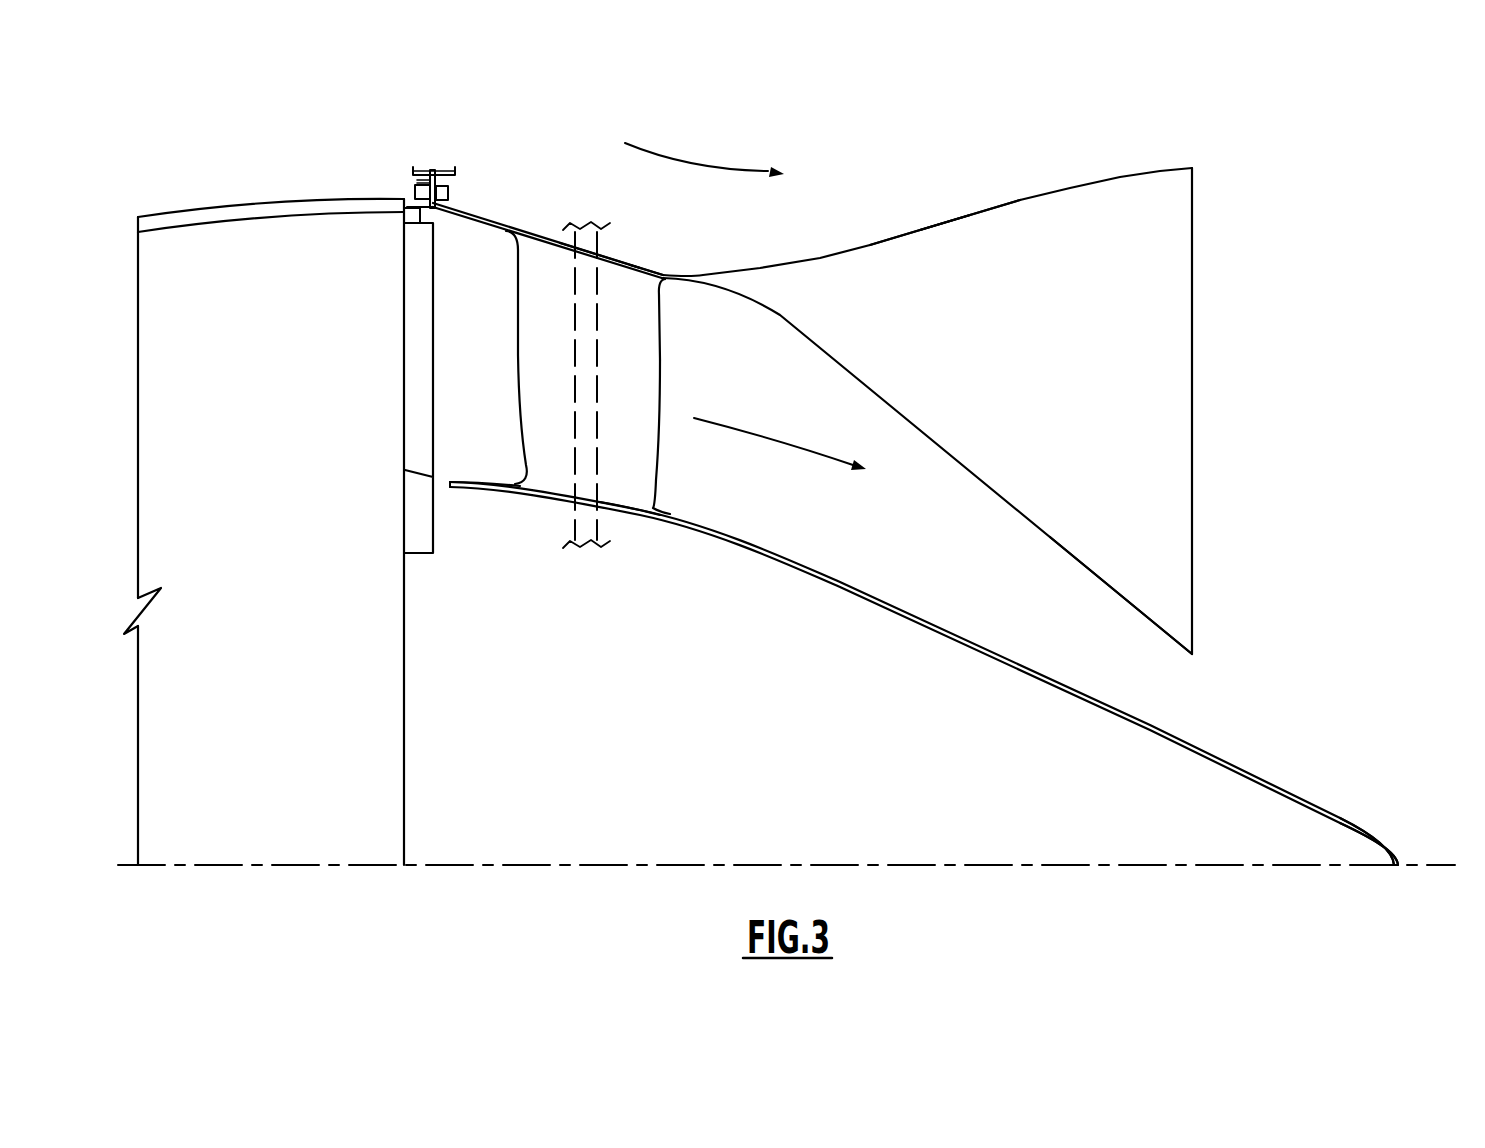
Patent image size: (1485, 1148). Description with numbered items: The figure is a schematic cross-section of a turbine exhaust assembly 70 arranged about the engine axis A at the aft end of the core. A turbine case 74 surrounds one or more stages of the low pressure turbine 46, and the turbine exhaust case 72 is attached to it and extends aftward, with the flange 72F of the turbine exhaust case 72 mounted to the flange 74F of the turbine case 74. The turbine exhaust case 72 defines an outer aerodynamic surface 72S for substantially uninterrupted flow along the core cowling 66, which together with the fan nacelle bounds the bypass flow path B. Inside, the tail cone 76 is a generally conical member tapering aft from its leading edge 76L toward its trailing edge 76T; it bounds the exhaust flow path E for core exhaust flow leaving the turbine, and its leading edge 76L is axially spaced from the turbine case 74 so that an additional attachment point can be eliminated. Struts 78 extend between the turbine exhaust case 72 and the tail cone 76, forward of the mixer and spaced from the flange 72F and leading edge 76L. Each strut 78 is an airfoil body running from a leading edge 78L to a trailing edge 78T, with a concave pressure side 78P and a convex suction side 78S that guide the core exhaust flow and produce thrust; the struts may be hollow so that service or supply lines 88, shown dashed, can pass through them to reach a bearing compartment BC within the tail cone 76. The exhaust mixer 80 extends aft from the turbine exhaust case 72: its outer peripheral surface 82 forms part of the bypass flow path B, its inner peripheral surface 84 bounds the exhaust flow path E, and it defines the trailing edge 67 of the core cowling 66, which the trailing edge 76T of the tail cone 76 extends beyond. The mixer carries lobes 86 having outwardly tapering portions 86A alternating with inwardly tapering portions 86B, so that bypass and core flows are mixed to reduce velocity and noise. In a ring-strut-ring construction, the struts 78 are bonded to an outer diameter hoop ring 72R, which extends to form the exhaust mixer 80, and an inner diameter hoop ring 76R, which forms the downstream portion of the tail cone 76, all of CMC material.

The turbine exhaust assembly 70 is at (171, 102).
The low pressure turbine 46 is at (269, 534).
The core cowling 66 is at (299, 200).
The turbine case 74 is at (405, 197).
The flange of turbine case 74F is at (421, 168).
The flange of turbine exhaust case 72F is at (446, 168).
The turbine exhaust case 72 is at (497, 222).
The outer aerodynamic surface 72S is at (643, 268).
The outer diameter hoop ring 72R is at (665, 274).
The service or supply lines 88 is at (597, 348).
The struts 78 is at (645, 368).
The leading edge 78L is at (518, 360).
The trailing edge 78T is at (658, 392).
The suction side 78S is at (658, 466).
The pressure side 78P is at (625, 486).
The tail cone 76 is at (1222, 755).
The leading edge of tail cone 76L is at (463, 489).
The inner diameter hoop ring 76R is at (634, 512).
The trailing edge of tail cone 76T is at (1402, 848).
The lobes 86 is at (1030, 220).
The outwardly tapering portions 86A is at (1128, 174).
The inwardly tapering portions 86B is at (1105, 583).
The outer peripheral surface 82 is at (992, 211).
The exhaust mixer 80 is at (939, 217).
The trailing edge of core cowling 67 is at (1193, 283).
The inner peripheral surface 84 is at (944, 444).
The bypass flow path B is at (705, 163).
The exhaust flow path E is at (780, 432).
The engine axis A is at (1435, 863).
The bearing compartment BC is at (678, 728).